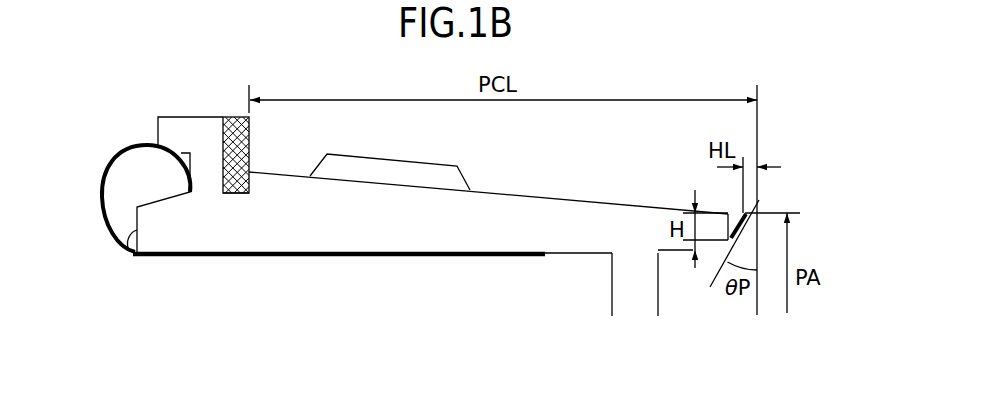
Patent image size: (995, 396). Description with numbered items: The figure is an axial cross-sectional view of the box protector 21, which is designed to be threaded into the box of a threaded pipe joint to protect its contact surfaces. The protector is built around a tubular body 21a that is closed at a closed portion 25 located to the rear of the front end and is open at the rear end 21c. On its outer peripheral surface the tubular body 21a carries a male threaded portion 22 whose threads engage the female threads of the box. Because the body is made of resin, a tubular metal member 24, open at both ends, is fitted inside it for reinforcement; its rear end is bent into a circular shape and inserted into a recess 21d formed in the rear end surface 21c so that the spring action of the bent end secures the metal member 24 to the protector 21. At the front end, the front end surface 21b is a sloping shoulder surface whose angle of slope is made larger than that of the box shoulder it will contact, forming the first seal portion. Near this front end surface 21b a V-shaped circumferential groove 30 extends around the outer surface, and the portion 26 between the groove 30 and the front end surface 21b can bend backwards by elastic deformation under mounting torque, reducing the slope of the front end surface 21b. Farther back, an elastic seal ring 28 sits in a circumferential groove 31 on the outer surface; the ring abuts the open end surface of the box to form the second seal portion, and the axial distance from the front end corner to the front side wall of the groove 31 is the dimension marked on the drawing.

The box protector 21 is at (558, 185).
The tubular body 21a is at (497, 252).
The front end surface 21b is at (747, 237).
The rear end 21c is at (126, 243).
The recess 21d is at (178, 181).
The male threaded portion 22 is at (395, 167).
The tubular metal member 24 is at (237, 258).
The closed portion 25 is at (652, 283).
The portion ahead of the groove 26 is at (755, 210).
The elastic seal ring 28 is at (237, 115).
The circumferential groove 30 is at (737, 212).
The circumferential groove 31 is at (233, 193).